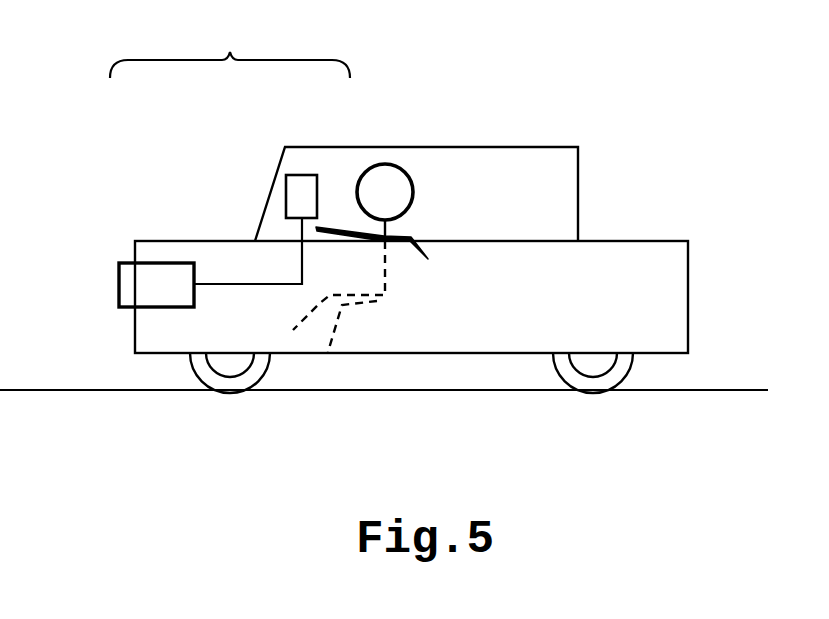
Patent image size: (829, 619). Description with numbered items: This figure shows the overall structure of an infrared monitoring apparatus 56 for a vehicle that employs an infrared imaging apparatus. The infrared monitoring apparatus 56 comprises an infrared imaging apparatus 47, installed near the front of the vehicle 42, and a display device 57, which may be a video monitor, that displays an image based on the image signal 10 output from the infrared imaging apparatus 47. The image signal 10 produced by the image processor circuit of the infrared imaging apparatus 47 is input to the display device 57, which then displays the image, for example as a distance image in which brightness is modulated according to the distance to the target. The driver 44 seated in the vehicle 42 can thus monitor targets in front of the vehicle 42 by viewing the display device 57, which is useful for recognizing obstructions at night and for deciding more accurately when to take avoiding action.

The image signal 10 is at (215, 283).
The vehicle 42 is at (535, 146).
The driver 44 is at (385, 163).
The infrared imaging apparatus 47 is at (155, 270).
The infrared monitoring apparatus for a vehicle 56 is at (230, 47).
The display device 57 is at (297, 175).